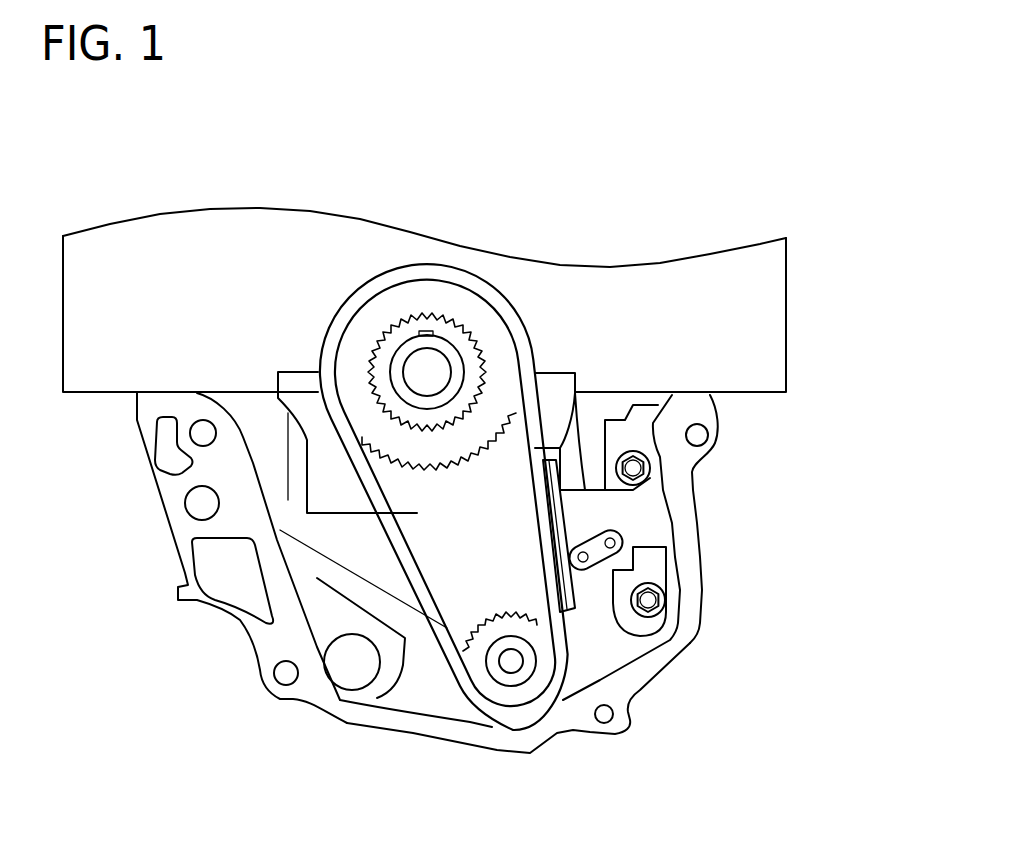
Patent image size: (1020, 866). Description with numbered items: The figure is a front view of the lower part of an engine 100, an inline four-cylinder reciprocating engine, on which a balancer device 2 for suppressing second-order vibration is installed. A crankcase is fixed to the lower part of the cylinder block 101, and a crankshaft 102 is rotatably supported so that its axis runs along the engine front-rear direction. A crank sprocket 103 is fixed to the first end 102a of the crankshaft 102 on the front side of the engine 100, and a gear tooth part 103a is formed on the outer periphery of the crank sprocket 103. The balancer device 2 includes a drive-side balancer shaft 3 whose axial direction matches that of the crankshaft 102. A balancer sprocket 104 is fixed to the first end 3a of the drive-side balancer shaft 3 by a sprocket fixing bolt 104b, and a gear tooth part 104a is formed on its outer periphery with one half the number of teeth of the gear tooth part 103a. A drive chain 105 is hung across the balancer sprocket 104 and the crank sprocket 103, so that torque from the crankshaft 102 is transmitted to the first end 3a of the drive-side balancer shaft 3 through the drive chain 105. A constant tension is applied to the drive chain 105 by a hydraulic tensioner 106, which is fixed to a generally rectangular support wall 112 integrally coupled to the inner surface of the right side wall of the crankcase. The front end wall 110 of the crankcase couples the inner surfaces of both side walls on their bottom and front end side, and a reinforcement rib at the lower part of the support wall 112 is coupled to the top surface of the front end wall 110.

The engine 100 is at (790, 292).
The cylinder block 101 is at (762, 377).
The crankshaft 102 is at (462, 350).
The first end 102a is at (438, 343).
The crank sprocket 103 is at (388, 312).
The gear tooth part 103a is at (450, 585).
The balancer sprocket 104 is at (528, 683).
The gear tooth part 104a is at (457, 623).
The sprocket fixing bolt 104b is at (507, 665).
The drive chain 105 is at (440, 548).
The hydraulic tensioner 106 is at (643, 527).
The front end wall 110 is at (348, 713).
The support wall 112 is at (645, 428).
The balancer device 2 is at (583, 653).
The drive-side balancer shaft 3 is at (538, 645).
The first end 3a is at (505, 679).